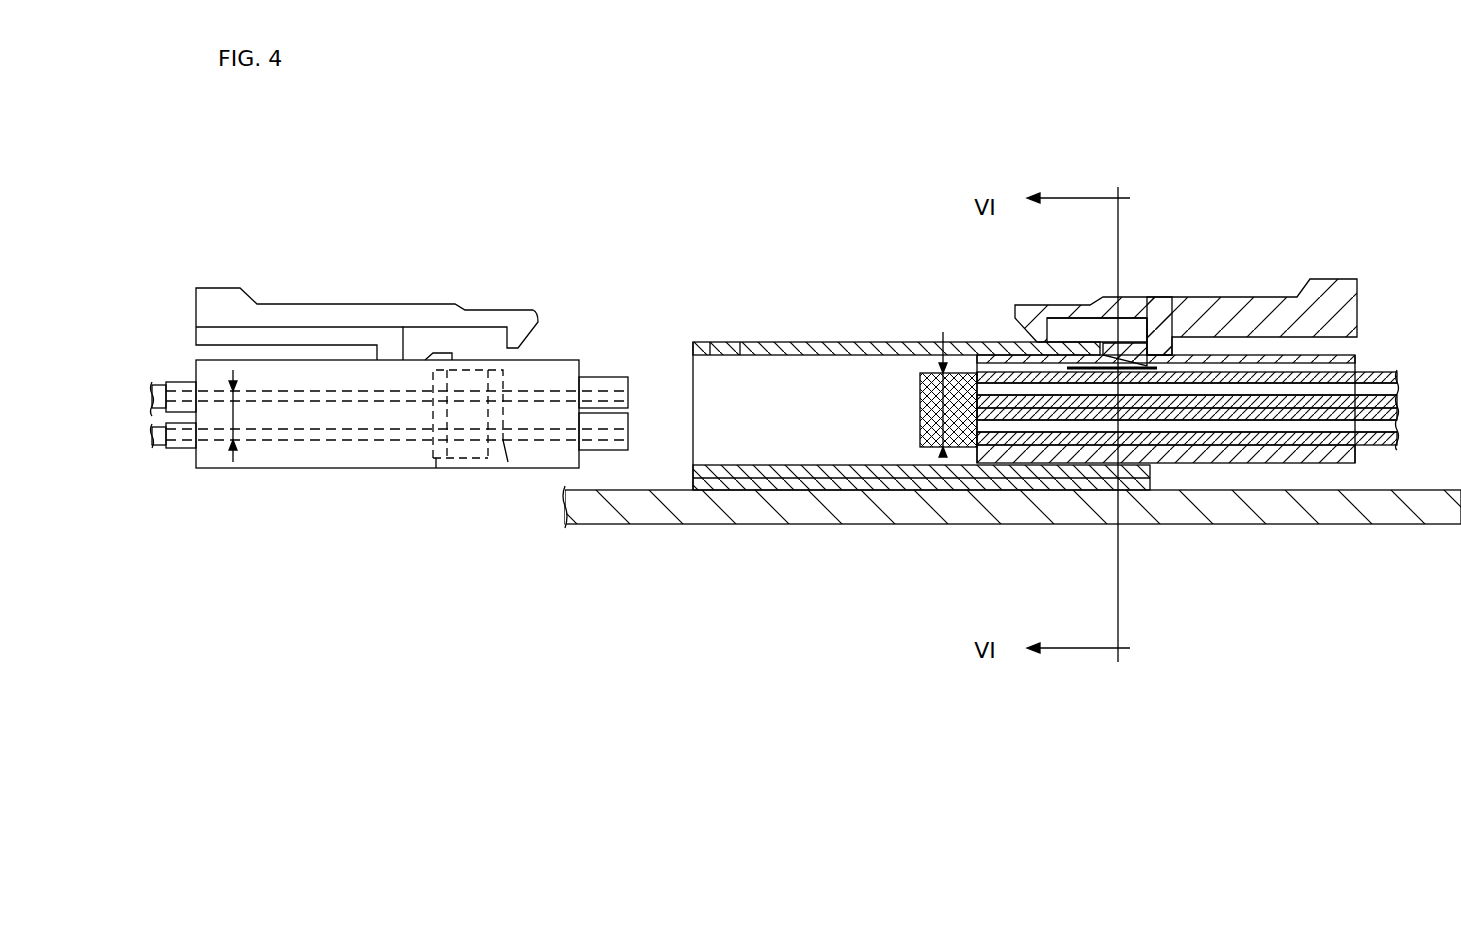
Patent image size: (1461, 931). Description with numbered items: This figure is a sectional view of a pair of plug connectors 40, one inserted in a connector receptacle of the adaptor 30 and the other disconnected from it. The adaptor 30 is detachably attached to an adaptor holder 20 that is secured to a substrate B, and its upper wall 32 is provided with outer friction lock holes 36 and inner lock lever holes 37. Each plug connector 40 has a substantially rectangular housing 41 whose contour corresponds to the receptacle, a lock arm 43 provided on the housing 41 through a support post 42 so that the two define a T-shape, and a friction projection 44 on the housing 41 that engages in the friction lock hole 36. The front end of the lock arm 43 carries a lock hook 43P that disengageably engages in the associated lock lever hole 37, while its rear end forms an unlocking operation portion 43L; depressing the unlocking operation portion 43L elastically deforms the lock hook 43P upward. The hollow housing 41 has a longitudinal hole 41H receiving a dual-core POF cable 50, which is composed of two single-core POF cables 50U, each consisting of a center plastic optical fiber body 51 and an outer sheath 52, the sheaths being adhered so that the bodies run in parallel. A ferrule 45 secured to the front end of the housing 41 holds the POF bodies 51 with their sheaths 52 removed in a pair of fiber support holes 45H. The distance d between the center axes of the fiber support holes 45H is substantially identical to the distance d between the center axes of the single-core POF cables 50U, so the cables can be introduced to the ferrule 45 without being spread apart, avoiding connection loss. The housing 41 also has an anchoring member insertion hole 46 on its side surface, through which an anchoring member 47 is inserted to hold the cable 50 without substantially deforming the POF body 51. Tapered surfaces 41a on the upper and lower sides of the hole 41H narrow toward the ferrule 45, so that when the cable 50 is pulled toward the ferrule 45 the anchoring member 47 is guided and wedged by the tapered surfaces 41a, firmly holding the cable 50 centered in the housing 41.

The adaptor holder 20 is at (1115, 470).
The adaptor 30 is at (860, 328).
The upper wall 32 is at (850, 350).
The friction lock hole 36 is at (735, 353).
The lock lever hole 37 is at (805, 352).
The plug connector 40 is at (499, 285).
The housing 41 is at (385, 468).
The tapered surface 41a is at (1068, 345).
The longitudinal hole 41H is at (1355, 450).
The support post 42 is at (390, 337).
The lock arm 43 is at (305, 318).
The unlocking operation portion 43L is at (224, 298).
The lock hook 43P is at (530, 318).
The friction projection 44 is at (445, 352).
The ferrule 45 is at (625, 378).
The fiber support hole 45H is at (940, 380).
The anchoring member insertion hole 46 is at (445, 470).
The anchoring member 47 is at (500, 460).
The dual-core POF cable 50 is at (180, 324).
The single-core POF cable 50U is at (172, 382).
The plastic optical fiber body 51 is at (155, 440).
The outer sheath 52 is at (178, 452).
The substrate B is at (820, 520).
The distance d is at (235, 408).